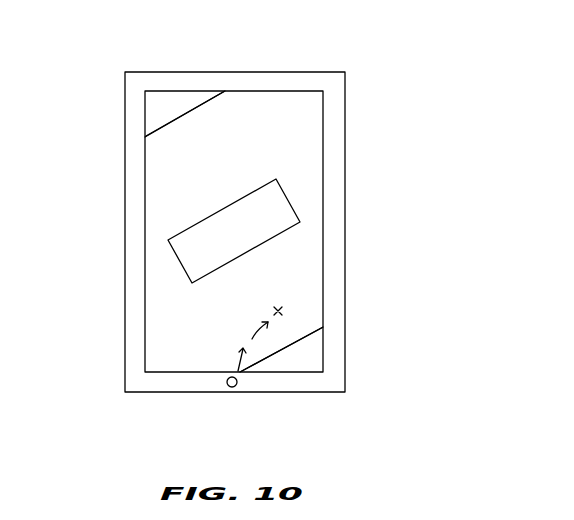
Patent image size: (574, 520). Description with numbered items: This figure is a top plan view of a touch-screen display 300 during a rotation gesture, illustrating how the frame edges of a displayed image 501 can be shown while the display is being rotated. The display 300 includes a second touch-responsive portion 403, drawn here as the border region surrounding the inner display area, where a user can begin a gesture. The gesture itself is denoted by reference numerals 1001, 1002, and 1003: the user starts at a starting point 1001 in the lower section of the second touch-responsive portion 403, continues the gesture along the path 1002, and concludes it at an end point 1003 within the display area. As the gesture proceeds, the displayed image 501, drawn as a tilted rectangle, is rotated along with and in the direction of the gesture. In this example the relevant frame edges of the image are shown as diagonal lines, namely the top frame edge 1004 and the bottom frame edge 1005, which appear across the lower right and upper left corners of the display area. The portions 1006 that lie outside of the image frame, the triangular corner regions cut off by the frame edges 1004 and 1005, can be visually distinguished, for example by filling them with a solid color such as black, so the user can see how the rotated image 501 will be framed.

The touch-screen display 300 is at (288, 105).
The second touch-responsive portion 403 is at (275, 388).
The displayed image 501 is at (283, 188).
The gesture starting point 1001 is at (228, 385).
The gesture continuation 1002 is at (252, 340).
The gesture end point 1003 is at (281, 304).
The top frame edge 1004 is at (299, 340).
The bottom frame edge 1005 is at (166, 128).
The portions outside the image frame 1006 is at (173, 105).